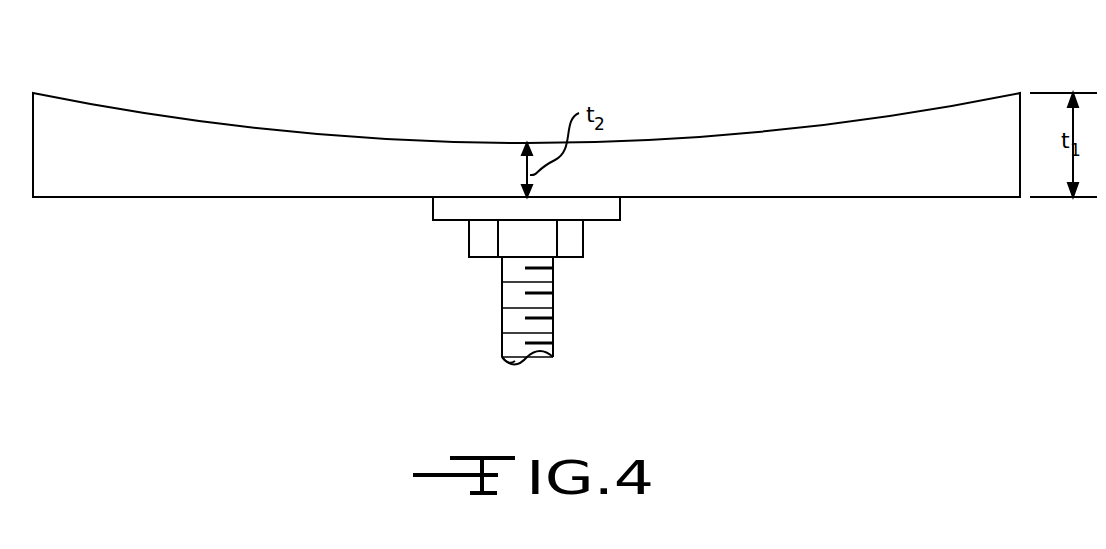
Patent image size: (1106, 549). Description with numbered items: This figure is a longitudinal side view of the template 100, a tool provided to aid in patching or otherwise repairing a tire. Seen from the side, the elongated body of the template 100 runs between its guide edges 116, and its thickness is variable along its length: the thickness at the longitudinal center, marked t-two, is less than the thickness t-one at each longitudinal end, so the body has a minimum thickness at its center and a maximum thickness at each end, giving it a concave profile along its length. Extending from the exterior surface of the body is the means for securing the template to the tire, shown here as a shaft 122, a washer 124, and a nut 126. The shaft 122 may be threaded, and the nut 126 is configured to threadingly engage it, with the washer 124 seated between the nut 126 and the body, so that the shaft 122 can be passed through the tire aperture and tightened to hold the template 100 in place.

The template 100 is at (250, 91).
The guide edges 116 is at (935, 168).
The shaft 122 is at (553, 300).
The washer 124 is at (620, 208).
The nut 126 is at (583, 233).